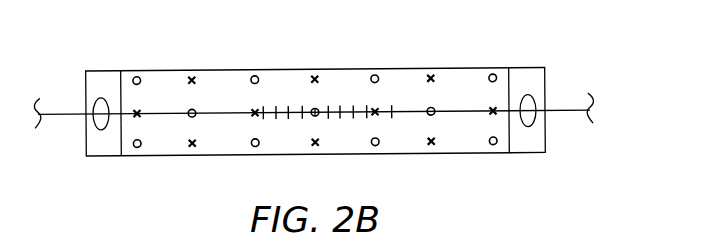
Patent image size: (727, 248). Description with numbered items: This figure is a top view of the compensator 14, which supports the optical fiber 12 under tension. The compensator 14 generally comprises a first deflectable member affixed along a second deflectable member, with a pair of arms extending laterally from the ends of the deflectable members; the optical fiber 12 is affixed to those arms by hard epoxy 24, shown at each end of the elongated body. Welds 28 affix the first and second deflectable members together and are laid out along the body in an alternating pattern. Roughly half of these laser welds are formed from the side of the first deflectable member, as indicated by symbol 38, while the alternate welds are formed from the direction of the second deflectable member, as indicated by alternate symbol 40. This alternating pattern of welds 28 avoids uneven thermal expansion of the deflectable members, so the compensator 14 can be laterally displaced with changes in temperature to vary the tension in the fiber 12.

The optical fiber 12 is at (318, 96).
The compensator 14 is at (316, 84).
The hard epoxy 24 is at (544, 76).
The weld 28 is at (315, 84).
The symbol 38 is at (169, 169).
The alternate symbol 40 is at (468, 168).